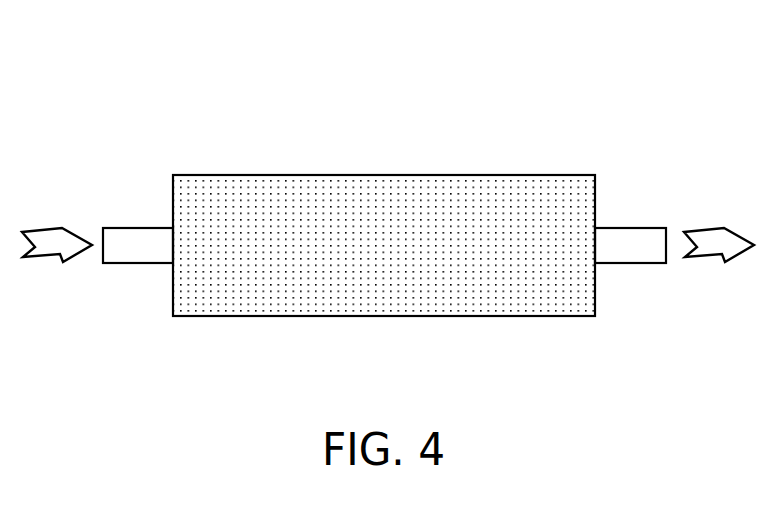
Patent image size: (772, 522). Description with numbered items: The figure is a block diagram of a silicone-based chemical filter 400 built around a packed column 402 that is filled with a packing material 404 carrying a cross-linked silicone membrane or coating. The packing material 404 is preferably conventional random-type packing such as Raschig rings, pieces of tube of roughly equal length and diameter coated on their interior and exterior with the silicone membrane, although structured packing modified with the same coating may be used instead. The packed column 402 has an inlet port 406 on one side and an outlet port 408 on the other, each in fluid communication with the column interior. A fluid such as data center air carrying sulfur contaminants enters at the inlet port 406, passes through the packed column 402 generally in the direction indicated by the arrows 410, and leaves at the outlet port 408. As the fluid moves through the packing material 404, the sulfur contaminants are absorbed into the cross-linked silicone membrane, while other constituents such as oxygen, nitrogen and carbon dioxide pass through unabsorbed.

The silicone-based chemical filter 400 is at (127, 59).
The packed column 402 is at (293, 174).
The packing material 404 is at (438, 207).
The inlet port 406 is at (120, 247).
The outlet port 408 is at (615, 250).
The arrows 410 is at (38, 248).